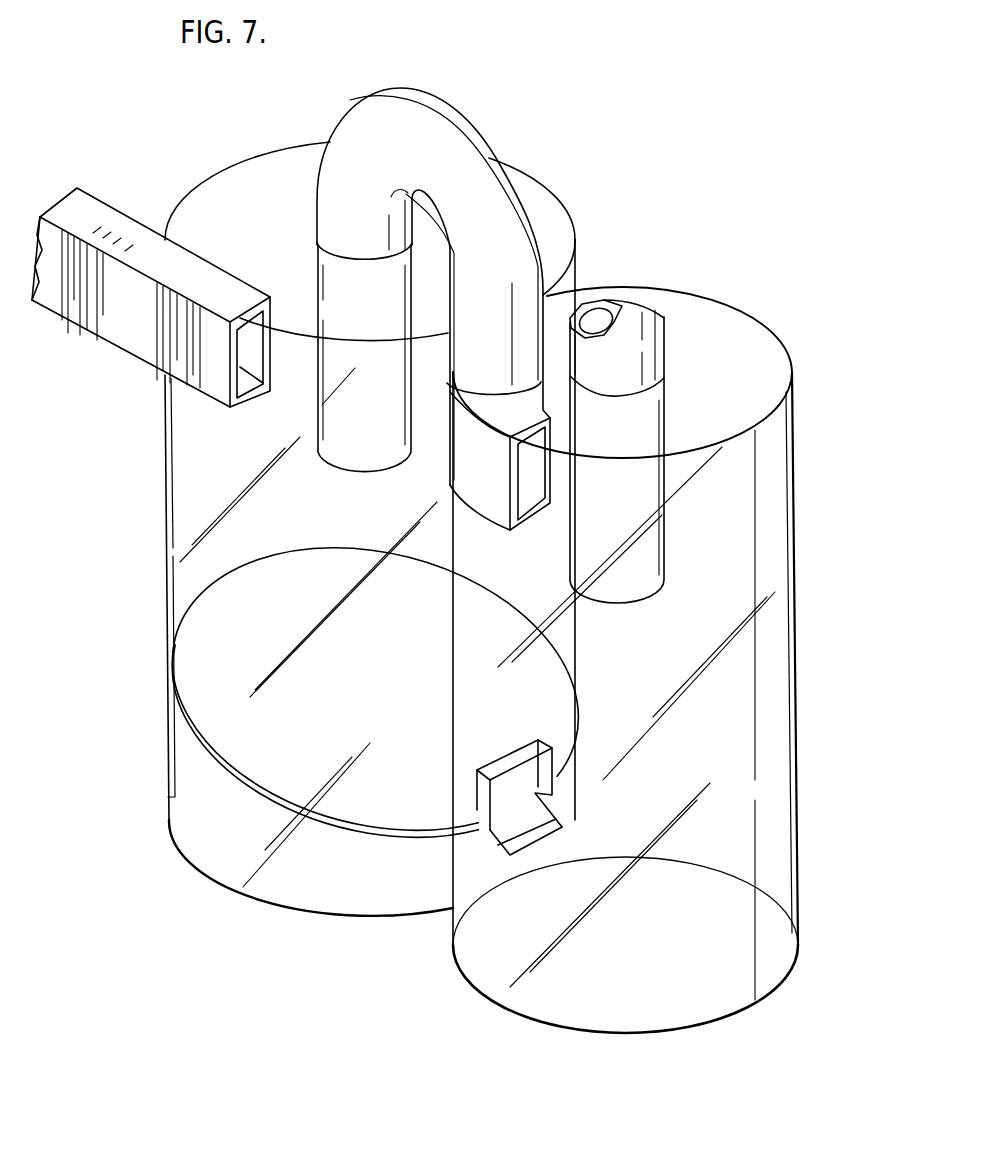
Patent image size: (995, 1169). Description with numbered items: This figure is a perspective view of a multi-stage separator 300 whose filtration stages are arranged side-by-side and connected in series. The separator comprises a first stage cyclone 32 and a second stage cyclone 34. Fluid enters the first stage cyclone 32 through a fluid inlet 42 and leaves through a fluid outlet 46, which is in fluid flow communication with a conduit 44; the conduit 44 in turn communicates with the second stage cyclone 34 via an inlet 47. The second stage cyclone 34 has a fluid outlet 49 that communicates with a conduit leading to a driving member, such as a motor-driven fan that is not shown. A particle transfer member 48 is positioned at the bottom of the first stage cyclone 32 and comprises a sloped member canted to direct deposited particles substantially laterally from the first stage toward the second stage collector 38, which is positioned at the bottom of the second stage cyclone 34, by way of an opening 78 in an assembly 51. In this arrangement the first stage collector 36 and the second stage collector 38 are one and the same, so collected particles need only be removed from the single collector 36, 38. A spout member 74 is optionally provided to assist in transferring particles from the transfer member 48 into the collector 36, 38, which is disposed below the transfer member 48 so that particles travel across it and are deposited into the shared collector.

The multi-stage separator 300 is at (641, 172).
The first stage cyclone 32 is at (180, 532).
The second stage cyclone 34 is at (795, 717).
The first stage collector 36 is at (757, 933).
The second stage collector 38 is at (783, 952).
The fluid inlet 42 is at (246, 380).
The conduit 44 is at (466, 167).
The fluid outlet 46 is at (330, 470).
The inlet 47 is at (527, 493).
The particle transfer member 48 is at (195, 666).
The fluid outlet 49 is at (645, 346).
The assembly 51 is at (793, 588).
The spout member 74 is at (520, 827).
The opening 78 is at (500, 785).